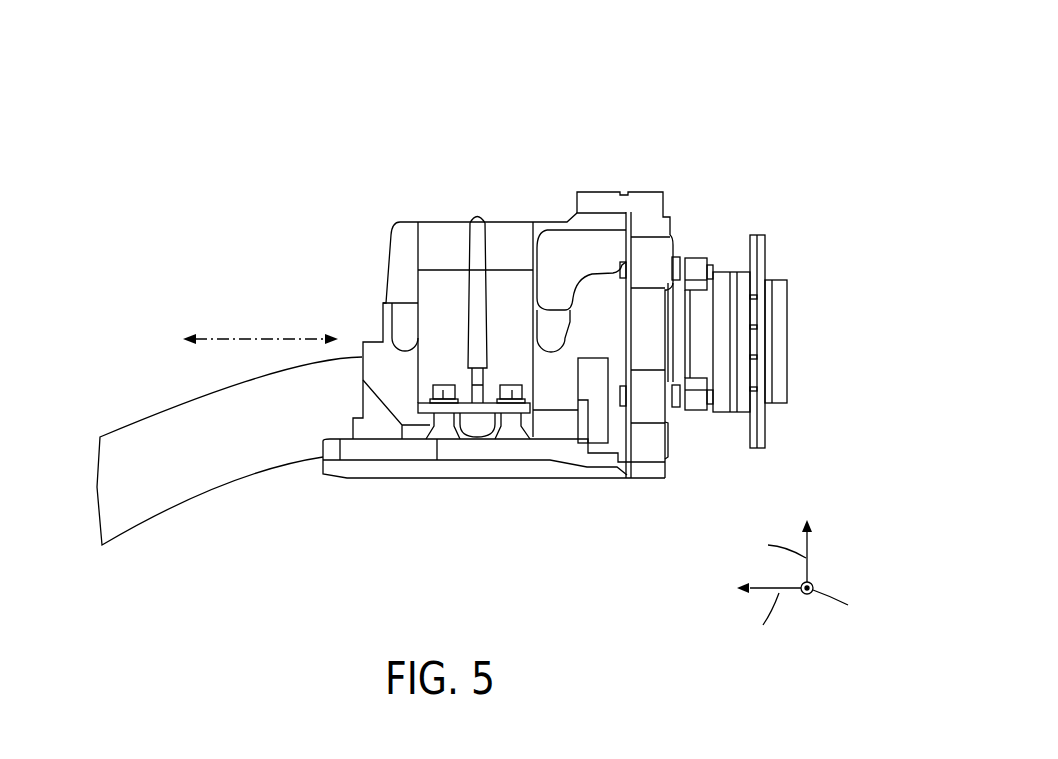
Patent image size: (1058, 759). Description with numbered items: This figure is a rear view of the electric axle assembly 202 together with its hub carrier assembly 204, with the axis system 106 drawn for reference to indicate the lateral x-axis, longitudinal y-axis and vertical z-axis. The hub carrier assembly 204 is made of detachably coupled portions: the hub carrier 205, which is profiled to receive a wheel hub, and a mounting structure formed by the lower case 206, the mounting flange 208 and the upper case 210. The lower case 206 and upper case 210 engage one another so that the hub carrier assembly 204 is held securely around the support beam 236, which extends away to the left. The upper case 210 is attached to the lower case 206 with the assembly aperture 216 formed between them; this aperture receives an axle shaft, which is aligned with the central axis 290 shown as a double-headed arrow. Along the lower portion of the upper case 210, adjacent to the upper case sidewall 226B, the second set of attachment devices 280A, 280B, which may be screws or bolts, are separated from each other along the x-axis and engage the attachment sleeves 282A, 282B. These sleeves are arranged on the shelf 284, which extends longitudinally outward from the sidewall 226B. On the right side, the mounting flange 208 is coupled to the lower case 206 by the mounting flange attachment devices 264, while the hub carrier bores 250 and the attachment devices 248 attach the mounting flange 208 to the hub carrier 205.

The electric axle assembly 202 is at (138, 130).
The hub carrier assembly 204 is at (247, 181).
The hub carrier 205 is at (836, 262).
The lower case 206 is at (273, 524).
The mounting flange 208 is at (663, 179).
The upper case 210 is at (456, 190).
The assembly aperture 216 is at (361, 277).
The upper case sidewall 226B is at (447, 293).
The support beam 236 is at (161, 418).
The attachment devices 248 is at (710, 262).
The hub carrier bores 250 is at (695, 262).
The mounting flange attachment devices 264 is at (681, 480).
The attachment device 280A is at (443, 396).
The attachment device 280B is at (512, 397).
The attachment sleeve 282A is at (443, 432).
The attachment sleeve 282B is at (515, 432).
The shelf 284 is at (477, 398).
The central axis 290 is at (250, 337).
The axis system 106 is at (852, 549).